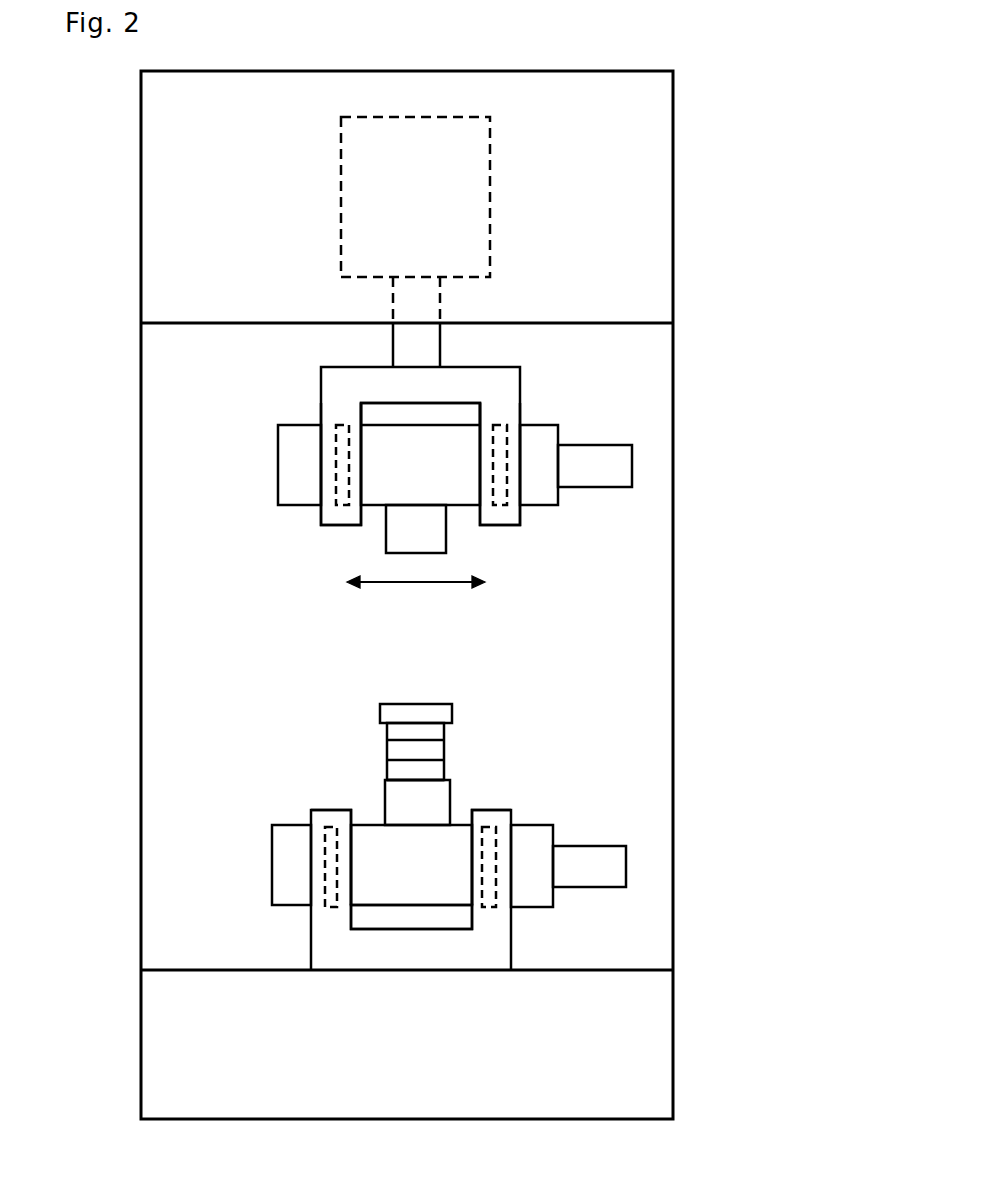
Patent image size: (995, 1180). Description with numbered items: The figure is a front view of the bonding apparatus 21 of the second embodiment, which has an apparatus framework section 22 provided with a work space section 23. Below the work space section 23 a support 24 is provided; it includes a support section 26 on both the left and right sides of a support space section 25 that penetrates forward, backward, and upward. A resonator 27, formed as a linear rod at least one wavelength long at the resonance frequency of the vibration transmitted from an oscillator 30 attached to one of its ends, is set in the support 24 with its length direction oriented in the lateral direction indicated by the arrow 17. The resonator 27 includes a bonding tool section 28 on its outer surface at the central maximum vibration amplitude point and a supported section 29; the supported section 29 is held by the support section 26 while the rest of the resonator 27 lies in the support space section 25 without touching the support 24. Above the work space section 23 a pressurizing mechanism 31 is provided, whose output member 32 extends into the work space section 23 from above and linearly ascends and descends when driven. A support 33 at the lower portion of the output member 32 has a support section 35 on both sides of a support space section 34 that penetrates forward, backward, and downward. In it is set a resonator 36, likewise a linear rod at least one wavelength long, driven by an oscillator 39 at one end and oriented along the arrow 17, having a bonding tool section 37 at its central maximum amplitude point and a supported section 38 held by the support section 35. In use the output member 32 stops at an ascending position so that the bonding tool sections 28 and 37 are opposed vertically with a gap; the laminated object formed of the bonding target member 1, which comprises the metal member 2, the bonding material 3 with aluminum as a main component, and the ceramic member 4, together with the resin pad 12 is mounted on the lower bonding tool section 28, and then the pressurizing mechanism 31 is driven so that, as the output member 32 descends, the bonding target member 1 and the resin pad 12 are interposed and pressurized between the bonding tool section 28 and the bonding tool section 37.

The bonding target member 1 is at (446, 752).
The metal member 2 is at (397, 771).
The bonding material 3 is at (394, 749).
The ceramic member 4 is at (390, 736).
The resin pad 12 is at (443, 712).
The arrow 17 is at (407, 582).
The bonding apparatus 21 is at (673, 71).
The apparatus framework section 22 is at (666, 199).
The work space section 23 is at (157, 654).
The support 24 is at (343, 949).
The support space section 25 is at (462, 918).
The support section 26 is at (318, 819).
The resonator 27 is at (282, 862).
The bonding tool section 28 is at (393, 789).
The supported section 29 is at (325, 897).
The oscillator 30 is at (620, 865).
The pressurizing mechanism 31 is at (480, 138).
The output member 32 is at (433, 339).
The support 33 is at (508, 388).
The support space section 34 is at (373, 414).
The support section 35 is at (332, 516).
The resonator 36 is at (290, 482).
The bonding tool section 37 is at (395, 539).
The supported section 38 is at (335, 446).
The oscillator 39 is at (625, 472).